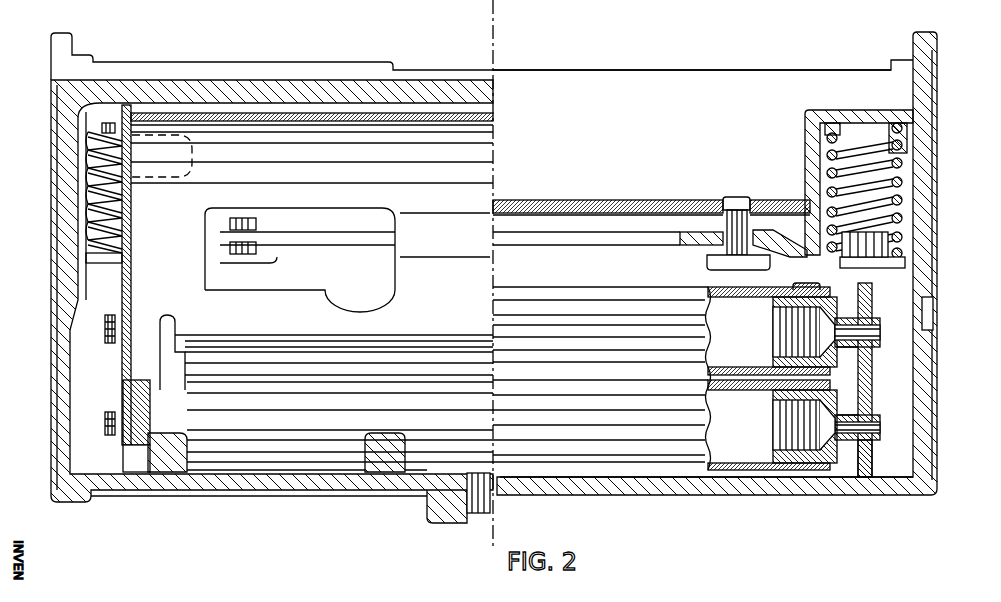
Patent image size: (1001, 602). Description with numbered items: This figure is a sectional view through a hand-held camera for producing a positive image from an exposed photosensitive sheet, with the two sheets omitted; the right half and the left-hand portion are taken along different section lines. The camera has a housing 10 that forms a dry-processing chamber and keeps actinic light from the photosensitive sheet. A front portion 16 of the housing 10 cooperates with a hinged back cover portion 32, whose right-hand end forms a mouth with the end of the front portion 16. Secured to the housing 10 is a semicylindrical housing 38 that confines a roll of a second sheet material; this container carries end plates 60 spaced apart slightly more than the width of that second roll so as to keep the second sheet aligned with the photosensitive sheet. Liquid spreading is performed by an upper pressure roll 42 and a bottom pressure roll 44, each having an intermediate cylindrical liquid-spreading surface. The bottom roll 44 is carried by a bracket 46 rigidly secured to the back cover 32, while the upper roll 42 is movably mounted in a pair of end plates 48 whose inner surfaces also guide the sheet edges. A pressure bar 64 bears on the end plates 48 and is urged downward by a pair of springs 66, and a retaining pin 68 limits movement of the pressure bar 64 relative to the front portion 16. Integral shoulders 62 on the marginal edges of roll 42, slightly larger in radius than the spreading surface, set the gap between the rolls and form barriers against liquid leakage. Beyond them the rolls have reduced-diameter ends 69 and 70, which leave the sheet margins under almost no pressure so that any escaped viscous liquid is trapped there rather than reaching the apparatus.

The housing 10 is at (705, 66).
The front portion 16 is at (920, 140).
The back cover portion 32 is at (813, 488).
The semicylindrical housing 38 is at (447, 285).
The upper pressure roll 42 is at (710, 290).
The bottom pressure roll 44 is at (730, 472).
The bracket 46 is at (118, 450).
The end plates 48 is at (118, 357).
The end plates 60 is at (131, 277).
The shoulders 62 is at (805, 283).
The pressure bar 64 is at (580, 240).
The springs 66 is at (90, 232).
The retaining pin 68 is at (707, 260).
The reduced-diameter end portion 69 is at (843, 350).
The reduced-diameter end portion 70 is at (848, 442).